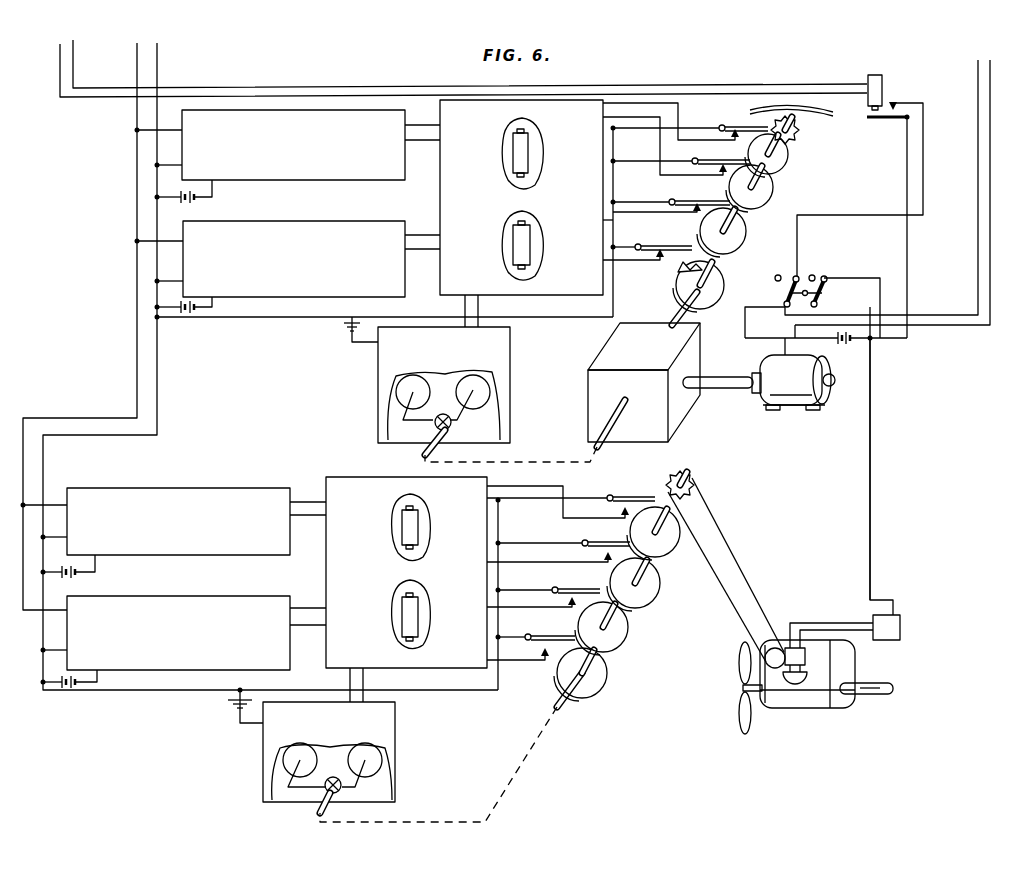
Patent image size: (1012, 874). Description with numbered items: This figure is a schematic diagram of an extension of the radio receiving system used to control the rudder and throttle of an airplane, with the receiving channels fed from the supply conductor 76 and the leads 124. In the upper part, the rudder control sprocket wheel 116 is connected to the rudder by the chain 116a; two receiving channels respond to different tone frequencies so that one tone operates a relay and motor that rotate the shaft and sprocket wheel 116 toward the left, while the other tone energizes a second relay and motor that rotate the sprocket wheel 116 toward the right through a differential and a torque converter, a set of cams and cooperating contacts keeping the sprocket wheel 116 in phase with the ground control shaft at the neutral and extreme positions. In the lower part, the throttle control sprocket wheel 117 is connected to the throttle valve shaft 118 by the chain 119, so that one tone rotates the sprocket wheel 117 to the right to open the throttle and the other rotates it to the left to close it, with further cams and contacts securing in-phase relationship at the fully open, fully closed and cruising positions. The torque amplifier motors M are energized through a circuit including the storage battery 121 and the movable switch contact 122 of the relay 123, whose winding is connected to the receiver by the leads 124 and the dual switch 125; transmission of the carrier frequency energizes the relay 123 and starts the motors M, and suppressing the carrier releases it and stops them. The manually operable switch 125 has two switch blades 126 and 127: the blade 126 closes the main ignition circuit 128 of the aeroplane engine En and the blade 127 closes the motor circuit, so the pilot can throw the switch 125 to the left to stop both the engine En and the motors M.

The leads 124 is at (72, 63).
The bus conductor 76 is at (137, 352).
The rudder control sprocket wheel 116 is at (798, 139).
The chain 116a is at (814, 110).
The torque amplifier motor M is at (800, 407).
The storage battery 121 is at (842, 345).
The movable switch contact 122 is at (900, 113).
The relay 123 is at (884, 86).
The manually operable switch 125 is at (832, 280).
The switch blade 126 is at (828, 302).
The switch blade 127 is at (786, 290).
The sprocket wheel 117 is at (700, 484).
The chain 119 is at (722, 545).
The throttle valve shaft 118 is at (788, 646).
The aeroplane engine En is at (827, 706).
The main ignition circuit 128 is at (870, 546).